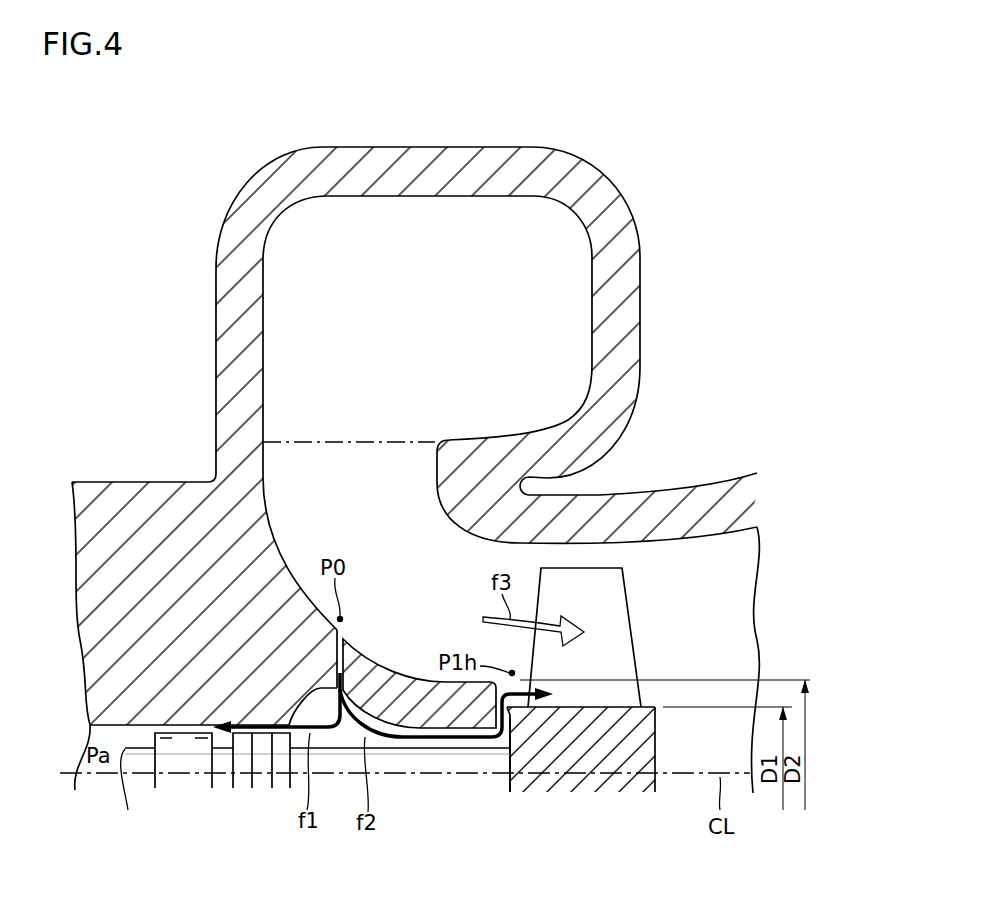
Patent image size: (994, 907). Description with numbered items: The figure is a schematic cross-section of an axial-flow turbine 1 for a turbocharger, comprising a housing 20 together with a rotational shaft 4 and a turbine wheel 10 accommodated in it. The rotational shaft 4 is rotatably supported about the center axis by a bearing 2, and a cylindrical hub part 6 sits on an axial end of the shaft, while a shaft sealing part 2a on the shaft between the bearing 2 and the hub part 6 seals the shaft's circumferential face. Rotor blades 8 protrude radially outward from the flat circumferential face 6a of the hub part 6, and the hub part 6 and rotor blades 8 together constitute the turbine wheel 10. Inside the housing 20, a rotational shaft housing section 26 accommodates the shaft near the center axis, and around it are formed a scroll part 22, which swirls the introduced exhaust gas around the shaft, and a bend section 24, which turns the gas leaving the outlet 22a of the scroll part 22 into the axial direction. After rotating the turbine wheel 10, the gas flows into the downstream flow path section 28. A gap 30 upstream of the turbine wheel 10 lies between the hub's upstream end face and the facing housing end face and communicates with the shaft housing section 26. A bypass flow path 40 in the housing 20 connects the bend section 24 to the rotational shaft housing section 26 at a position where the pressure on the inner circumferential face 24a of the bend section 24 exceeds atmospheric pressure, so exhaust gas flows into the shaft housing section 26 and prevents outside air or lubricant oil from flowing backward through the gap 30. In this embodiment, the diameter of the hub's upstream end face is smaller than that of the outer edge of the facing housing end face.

The axial-flow turbine for a turbocharger 1 is at (166, 166).
The bearing 2 is at (177, 765).
The shaft sealing part 2a is at (265, 765).
The rotational shaft 4 is at (412, 762).
The hub part 6 is at (587, 802).
The flat circumferential face of the hub part 6a is at (628, 706).
The rotor blades 8 is at (640, 629).
The turbine wheel 10 is at (670, 727).
The housing 20 is at (680, 302).
The scroll part 22 is at (435, 323).
The outlet of the scroll part 22a is at (430, 447).
The bend section 24 is at (408, 553).
The inner circumferential face of the bend section 24a is at (387, 660).
The rotational shaft housing section 26 is at (329, 719).
The downstream flow path section 28 is at (731, 655).
The gap 30 is at (508, 716).
The bypass flow path 40 is at (343, 630).